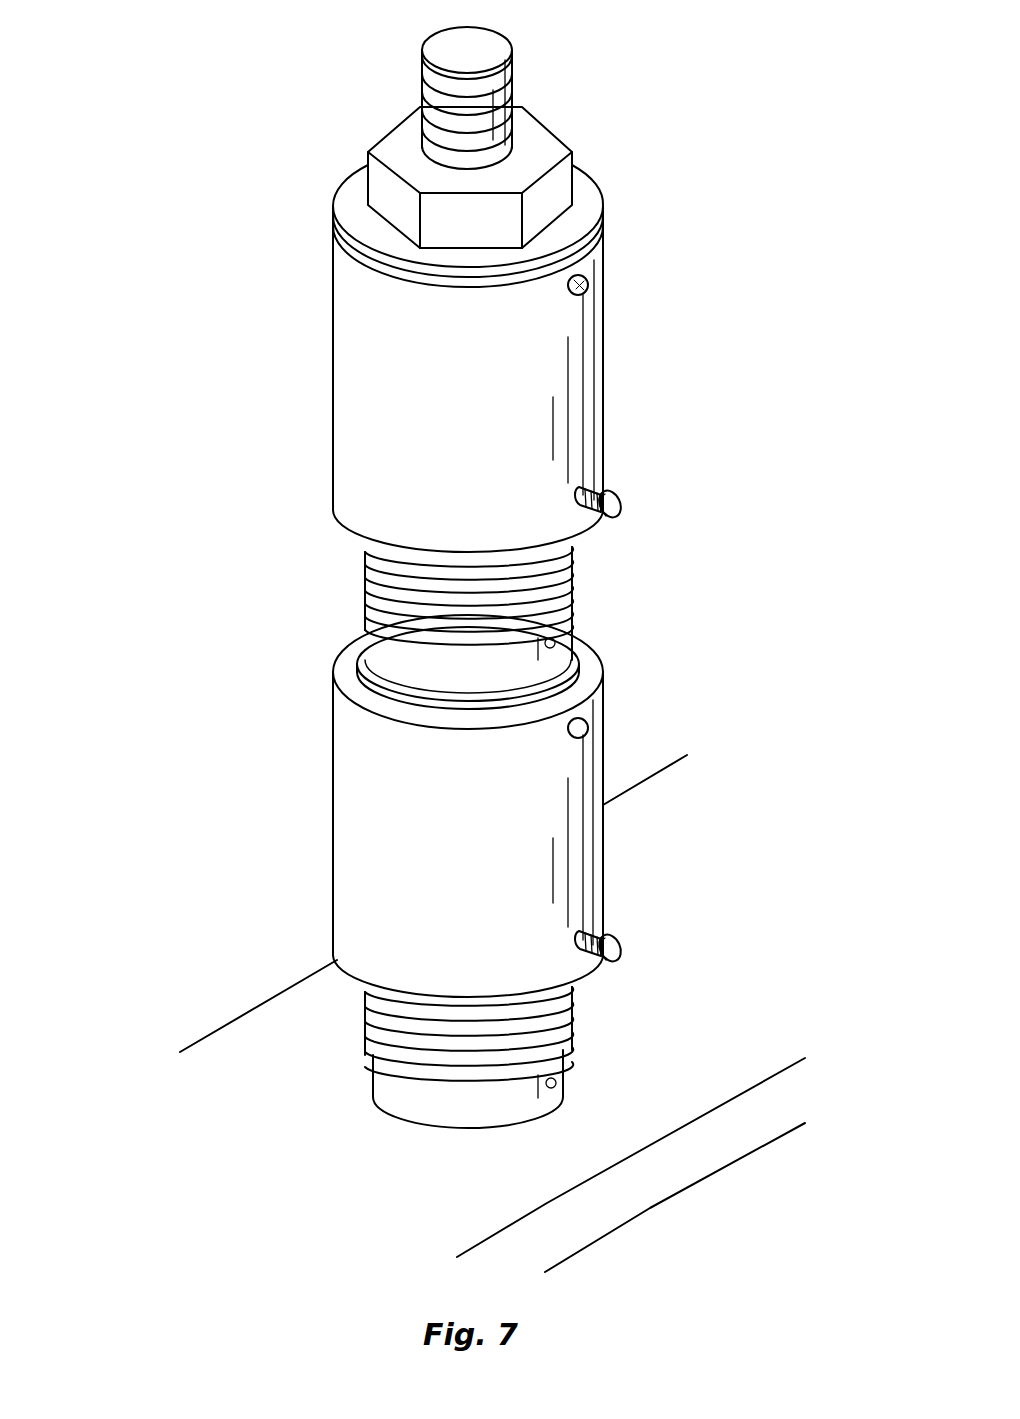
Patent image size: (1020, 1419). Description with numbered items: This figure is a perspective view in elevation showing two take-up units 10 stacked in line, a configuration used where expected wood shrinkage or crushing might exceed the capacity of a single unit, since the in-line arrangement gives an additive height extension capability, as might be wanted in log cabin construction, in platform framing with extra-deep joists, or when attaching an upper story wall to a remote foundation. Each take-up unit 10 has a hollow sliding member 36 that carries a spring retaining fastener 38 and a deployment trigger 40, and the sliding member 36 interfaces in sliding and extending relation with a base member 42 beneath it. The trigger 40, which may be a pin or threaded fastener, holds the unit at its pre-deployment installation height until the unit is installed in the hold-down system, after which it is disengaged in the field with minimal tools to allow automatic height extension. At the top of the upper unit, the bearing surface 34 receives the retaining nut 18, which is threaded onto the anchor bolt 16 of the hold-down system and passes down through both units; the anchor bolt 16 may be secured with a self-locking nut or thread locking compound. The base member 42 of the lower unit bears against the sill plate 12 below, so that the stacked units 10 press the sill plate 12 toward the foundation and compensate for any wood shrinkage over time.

The take-up unit 10 is at (229, 369).
The sill plate 12 is at (724, 1044).
The anchor bolt 16 is at (508, 68).
The retaining nut 18 is at (540, 148).
The bearing surface 34 is at (582, 206).
The sliding member 36 is at (352, 490).
The spring retaining fastener 38 is at (588, 284).
The deployment trigger 40 is at (612, 496).
The base member 42 is at (395, 648).